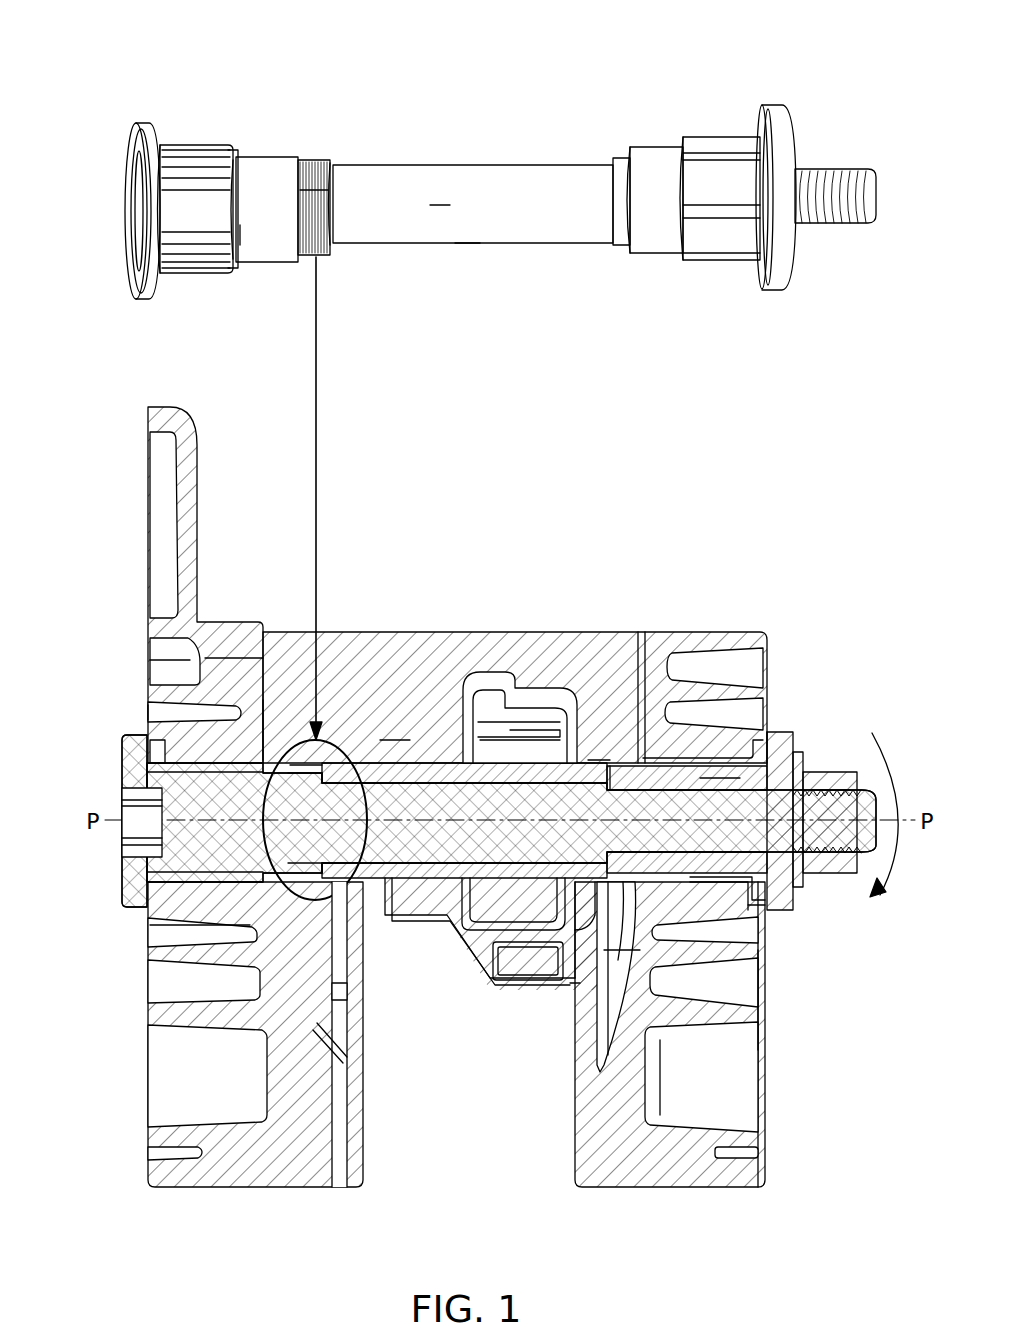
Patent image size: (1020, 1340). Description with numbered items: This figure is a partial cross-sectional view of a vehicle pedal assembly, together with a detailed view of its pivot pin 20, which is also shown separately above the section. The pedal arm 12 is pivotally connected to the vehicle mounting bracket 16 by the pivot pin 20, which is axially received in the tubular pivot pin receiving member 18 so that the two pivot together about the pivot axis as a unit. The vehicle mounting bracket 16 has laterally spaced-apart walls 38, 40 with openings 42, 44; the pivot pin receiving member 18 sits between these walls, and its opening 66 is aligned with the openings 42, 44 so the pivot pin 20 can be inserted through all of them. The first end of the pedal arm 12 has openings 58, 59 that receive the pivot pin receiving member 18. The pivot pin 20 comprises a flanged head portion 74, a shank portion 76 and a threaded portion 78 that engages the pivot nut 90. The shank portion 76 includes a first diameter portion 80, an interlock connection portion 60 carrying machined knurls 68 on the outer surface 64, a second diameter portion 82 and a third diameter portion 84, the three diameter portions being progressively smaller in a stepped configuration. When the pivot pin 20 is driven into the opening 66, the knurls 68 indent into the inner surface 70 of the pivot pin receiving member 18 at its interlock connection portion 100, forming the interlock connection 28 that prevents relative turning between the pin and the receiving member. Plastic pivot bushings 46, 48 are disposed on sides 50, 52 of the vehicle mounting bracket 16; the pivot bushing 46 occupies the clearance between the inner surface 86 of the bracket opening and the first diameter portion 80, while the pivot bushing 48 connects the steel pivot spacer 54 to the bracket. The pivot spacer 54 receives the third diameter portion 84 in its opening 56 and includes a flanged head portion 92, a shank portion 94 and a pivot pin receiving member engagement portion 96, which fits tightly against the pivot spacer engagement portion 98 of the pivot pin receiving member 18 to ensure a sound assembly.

The pedal arm 12 is at (458, 940).
The vehicle mounting bracket 16 is at (248, 1165).
The pivot pin receiving member 18 is at (370, 760).
The pivot pin 20 is at (440, 175).
The interlock connection 28 is at (362, 900).
The wall 38 is at (185, 735).
The wall 40 is at (685, 1090).
The opening 42 is at (147, 723).
The opening 44 is at (762, 1040).
The pivot bushing 46 is at (183, 150).
The pivot bushing 48 is at (710, 155).
The side 50 is at (182, 922).
The side 52 is at (730, 907).
The pivot spacer 54 is at (655, 157).
The opening 56 is at (722, 790).
The opening 58 is at (525, 670).
The opening 59 is at (585, 760).
The interlock connection portion 60 is at (312, 168).
The outer surface 64 is at (262, 158).
The opening 66 is at (440, 760).
The machined knurls 68 is at (318, 192).
The inner surface 70 is at (403, 760).
The flanged head portion 74 is at (128, 178).
The shank portion 76 is at (463, 240).
The threaded portion 78 is at (830, 223).
The first diameter portion 80 is at (262, 232).
The second diameter portion 82 is at (433, 210).
The third diameter portion 84 is at (667, 882).
The inner surface 86 is at (272, 762).
The pivot nut 90 is at (837, 785).
The flanged head portion 92 is at (770, 905).
The shank portion 94 is at (685, 788).
The pivot pin receiving member engagement portion 96 is at (648, 763).
The pivot spacer engagement portion 98 is at (572, 985).
The interlock connection portion 100 is at (292, 765).